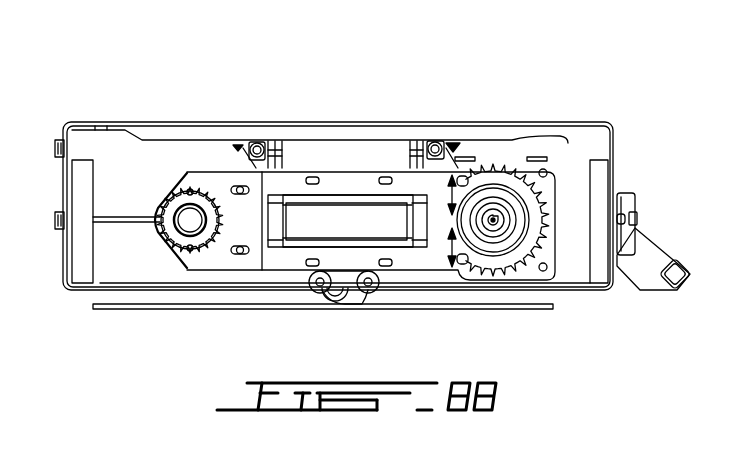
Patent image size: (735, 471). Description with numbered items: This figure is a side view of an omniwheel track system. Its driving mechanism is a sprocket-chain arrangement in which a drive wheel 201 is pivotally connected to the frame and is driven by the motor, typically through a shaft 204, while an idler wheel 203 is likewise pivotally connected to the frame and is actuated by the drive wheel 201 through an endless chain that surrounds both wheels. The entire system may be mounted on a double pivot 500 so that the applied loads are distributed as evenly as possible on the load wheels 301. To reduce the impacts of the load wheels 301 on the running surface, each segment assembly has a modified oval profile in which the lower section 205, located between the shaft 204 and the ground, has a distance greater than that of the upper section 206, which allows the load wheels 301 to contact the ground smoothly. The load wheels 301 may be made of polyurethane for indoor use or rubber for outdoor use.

The idler wheel 203 is at (165, 173).
The double pivot 500 is at (408, 200).
The upper section 206 is at (449, 180).
The lower section 205 is at (462, 260).
The drive wheel 201 is at (498, 165).
The shaft 204 is at (493, 220).
The load wheel 301 is at (345, 302).